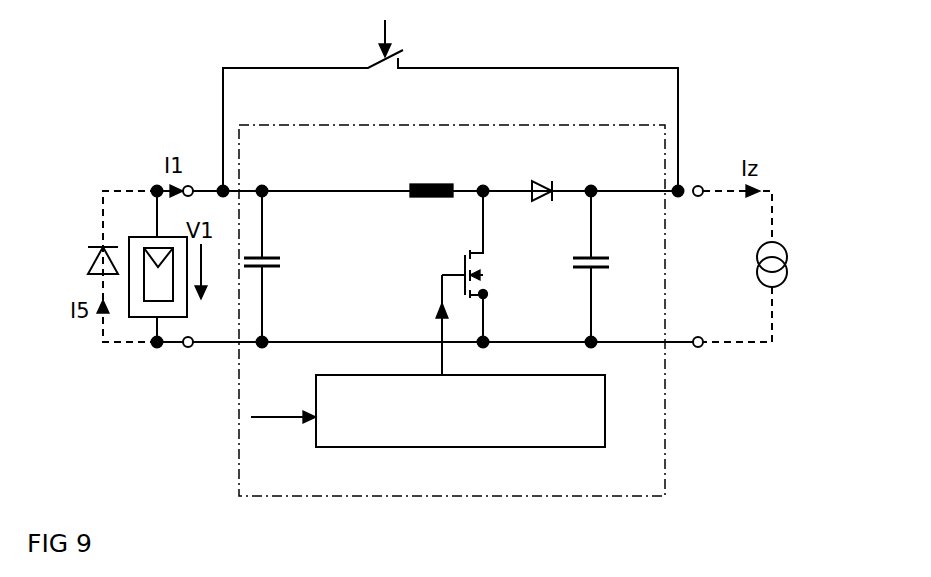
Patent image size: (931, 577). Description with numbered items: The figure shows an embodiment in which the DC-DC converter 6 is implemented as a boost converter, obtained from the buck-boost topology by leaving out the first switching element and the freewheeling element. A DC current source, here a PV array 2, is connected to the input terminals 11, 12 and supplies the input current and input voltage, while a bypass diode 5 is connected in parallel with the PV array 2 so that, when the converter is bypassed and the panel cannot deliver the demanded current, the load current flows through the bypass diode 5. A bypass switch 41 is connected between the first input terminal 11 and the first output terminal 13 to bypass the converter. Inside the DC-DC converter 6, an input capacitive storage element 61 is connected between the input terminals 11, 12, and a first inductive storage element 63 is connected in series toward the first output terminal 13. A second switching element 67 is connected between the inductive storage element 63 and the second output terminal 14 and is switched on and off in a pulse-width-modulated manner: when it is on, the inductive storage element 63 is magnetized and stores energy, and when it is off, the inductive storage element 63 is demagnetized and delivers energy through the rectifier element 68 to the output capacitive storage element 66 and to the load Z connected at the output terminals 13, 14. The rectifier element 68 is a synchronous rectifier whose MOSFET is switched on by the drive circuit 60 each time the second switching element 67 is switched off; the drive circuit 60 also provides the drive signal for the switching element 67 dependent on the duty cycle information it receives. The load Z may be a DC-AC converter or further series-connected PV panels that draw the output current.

The PV array 2 is at (148, 237).
The bypass diode 5 is at (99, 240).
The DC-DC converter 6 is at (405, 124).
The first input terminal 11 is at (190, 185).
The second input terminal 12 is at (190, 348).
The first output terminal 13 is at (698, 184).
The second output terminal 14 is at (699, 350).
The bypass switch 41 is at (405, 58).
The drive circuit 60 is at (606, 417).
The input capacitive storage element 61 is at (284, 263).
The first inductive storage element 63 is at (424, 184).
The output capacitive storage element 66 is at (613, 264).
The second switching element 67 is at (490, 276).
The rectifier element 68 is at (540, 180).
The load Z is at (790, 253).